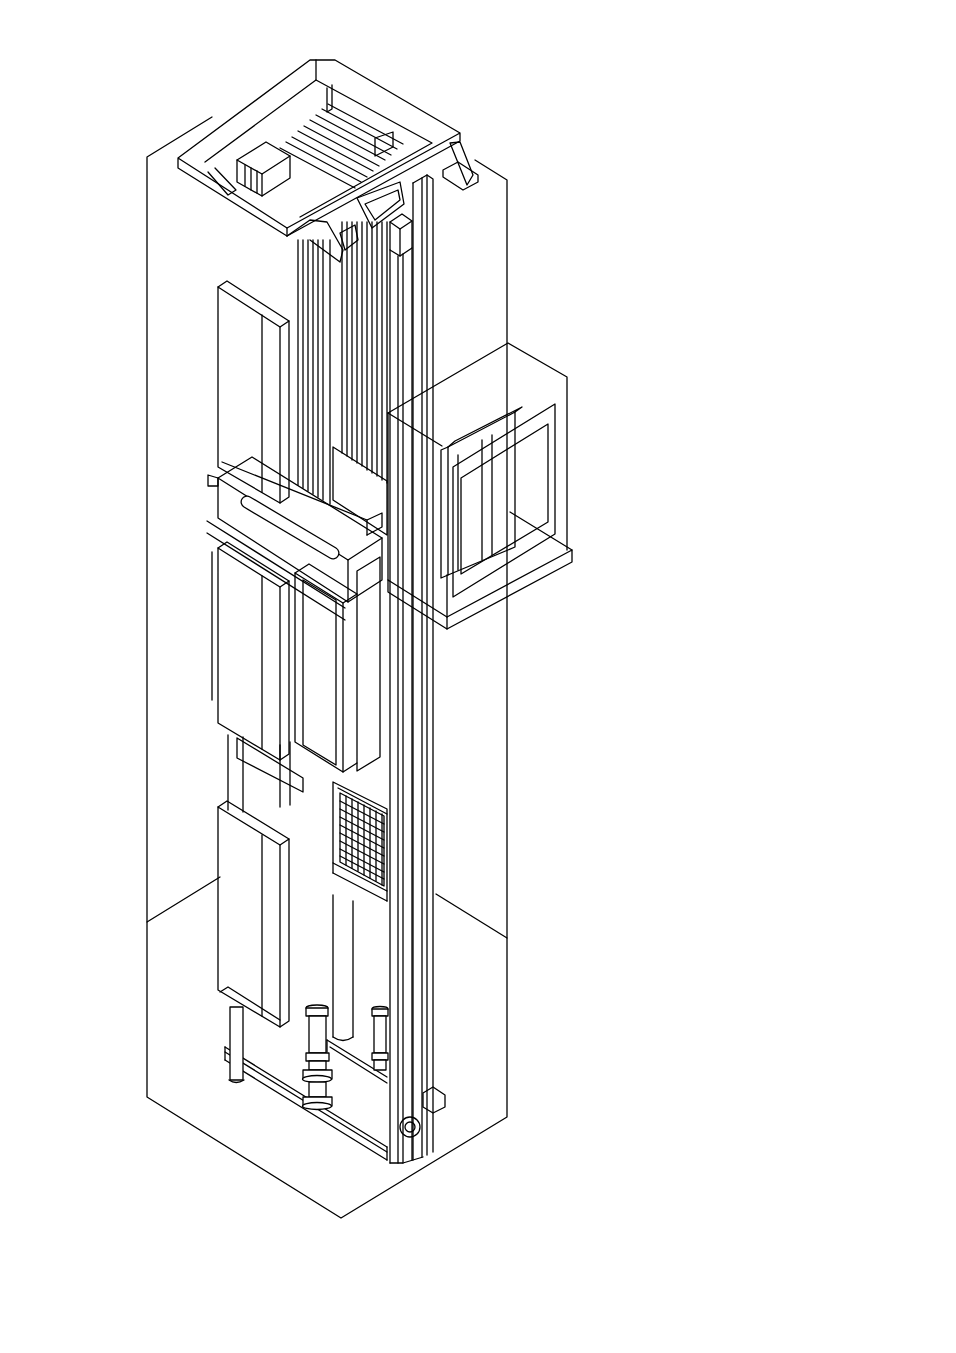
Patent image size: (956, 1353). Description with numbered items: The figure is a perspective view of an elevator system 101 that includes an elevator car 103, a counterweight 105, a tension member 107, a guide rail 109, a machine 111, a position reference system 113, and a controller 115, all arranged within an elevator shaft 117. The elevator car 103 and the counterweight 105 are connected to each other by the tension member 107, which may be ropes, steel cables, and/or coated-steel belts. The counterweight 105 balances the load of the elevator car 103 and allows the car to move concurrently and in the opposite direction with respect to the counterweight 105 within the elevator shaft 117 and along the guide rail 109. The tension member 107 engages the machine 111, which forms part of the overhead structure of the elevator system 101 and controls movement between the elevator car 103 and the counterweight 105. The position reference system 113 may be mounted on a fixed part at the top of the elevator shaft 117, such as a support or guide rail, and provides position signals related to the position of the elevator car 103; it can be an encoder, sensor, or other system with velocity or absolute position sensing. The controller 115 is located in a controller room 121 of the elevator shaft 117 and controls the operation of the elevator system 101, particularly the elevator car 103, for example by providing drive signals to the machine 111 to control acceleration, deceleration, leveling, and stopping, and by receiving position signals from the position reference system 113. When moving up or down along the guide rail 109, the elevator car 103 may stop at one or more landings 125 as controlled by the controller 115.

The elevator system 101 is at (566, 109).
The elevator car 103 is at (333, 688).
The counterweight 105 is at (390, 850).
The tension member 107 is at (333, 393).
The guide rail 109 is at (408, 778).
The machine 111 is at (245, 155).
The position reference system 113 is at (405, 238).
The controller 115 is at (513, 486).
The elevator shaft 117 is at (197, 780).
The controller room 121 is at (568, 378).
The landings 125 is at (213, 378).